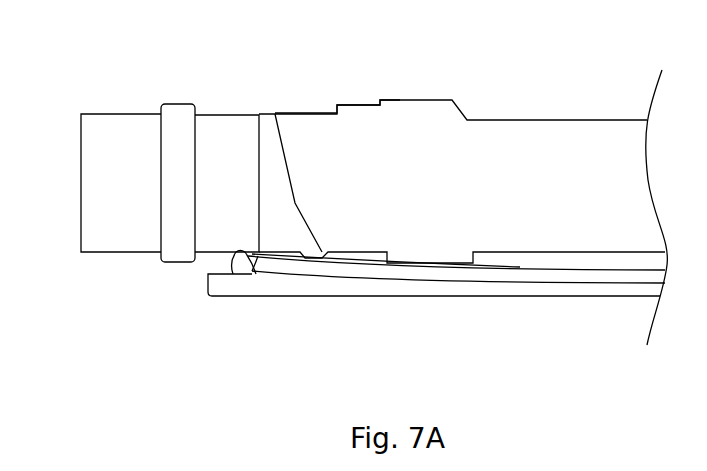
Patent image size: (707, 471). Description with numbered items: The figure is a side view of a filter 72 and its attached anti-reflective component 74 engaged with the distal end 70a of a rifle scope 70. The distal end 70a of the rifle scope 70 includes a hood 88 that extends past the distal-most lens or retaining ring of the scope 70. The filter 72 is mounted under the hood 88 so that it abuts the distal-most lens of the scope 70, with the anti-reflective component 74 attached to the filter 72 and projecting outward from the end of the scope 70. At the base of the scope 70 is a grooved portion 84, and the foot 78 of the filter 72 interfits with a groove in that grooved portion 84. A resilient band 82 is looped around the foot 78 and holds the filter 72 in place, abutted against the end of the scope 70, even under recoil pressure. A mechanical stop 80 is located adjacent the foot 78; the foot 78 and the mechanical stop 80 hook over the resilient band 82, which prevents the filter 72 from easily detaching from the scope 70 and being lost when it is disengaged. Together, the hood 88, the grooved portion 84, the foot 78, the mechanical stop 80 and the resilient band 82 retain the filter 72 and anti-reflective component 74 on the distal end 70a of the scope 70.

The rifle scope 70 is at (458, 116).
The distal end of rifle scope 70a is at (318, 90).
The filter 72 is at (249, 104).
The anti-reflective component 74 is at (108, 247).
The foot 78 is at (259, 277).
The mechanical stop 80 is at (228, 262).
The resilient band 82 is at (430, 275).
The grooved portion 84 is at (215, 298).
The hood 88 is at (287, 120).